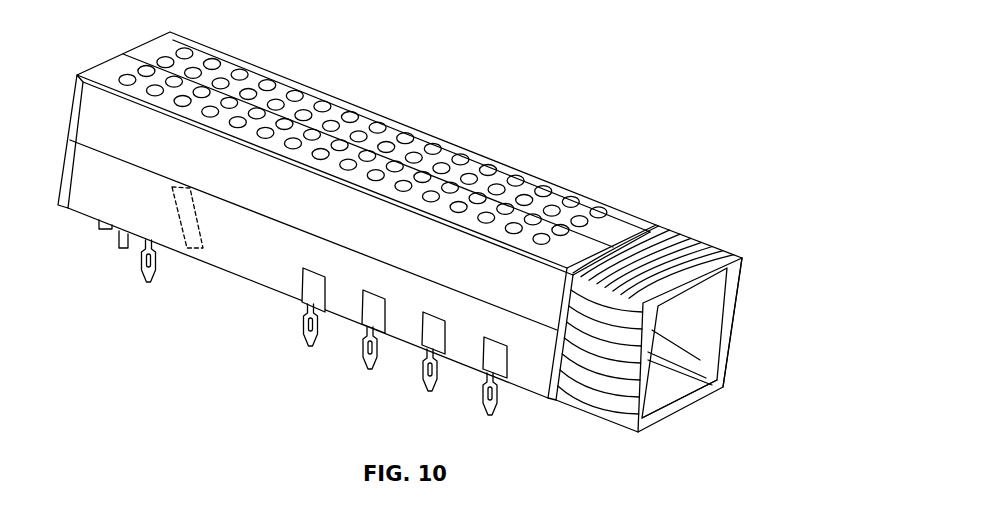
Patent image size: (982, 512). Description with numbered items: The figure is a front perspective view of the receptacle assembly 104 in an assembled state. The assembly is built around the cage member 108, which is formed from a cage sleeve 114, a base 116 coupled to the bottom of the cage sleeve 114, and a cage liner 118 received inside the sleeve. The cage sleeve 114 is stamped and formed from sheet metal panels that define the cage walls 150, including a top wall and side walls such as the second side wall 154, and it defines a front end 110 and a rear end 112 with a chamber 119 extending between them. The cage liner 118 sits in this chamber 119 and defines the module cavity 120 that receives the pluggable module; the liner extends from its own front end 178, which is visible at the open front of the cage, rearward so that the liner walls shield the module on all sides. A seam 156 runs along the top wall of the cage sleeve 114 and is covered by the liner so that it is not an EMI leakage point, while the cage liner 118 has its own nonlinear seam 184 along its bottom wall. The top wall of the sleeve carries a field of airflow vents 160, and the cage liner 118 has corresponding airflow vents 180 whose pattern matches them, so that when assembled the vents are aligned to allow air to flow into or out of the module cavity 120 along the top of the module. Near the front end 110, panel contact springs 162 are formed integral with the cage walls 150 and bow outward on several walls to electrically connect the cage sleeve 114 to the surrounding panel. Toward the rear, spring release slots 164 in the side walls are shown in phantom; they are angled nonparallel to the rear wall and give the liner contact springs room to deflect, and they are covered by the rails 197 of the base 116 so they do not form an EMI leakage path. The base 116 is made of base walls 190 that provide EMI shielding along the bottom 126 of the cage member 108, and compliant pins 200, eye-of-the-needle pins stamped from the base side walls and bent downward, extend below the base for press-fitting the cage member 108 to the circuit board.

The receptacle assembly 104 is at (562, 115).
The cage member 108 is at (558, 180).
The front end 110 is at (678, 402).
The rear end 112 is at (70, 123).
The cage sleeve 114 is at (496, 282).
The base 116 is at (527, 352).
The cage liner 118 is at (683, 330).
The chamber 119 is at (741, 277).
The module cavity 120 is at (716, 316).
The bottom 126 is at (264, 312).
The cage walls 150 is at (422, 136).
The second side wall 154 is at (370, 233).
The seam 156 is at (490, 192).
The airflow vents 160 is at (458, 157).
The panel contact springs 162 is at (583, 373).
The spring release slots 164 is at (186, 232).
The front end 178 is at (739, 302).
The airflow vents 180 is at (601, 211).
The seam 184 is at (668, 379).
The base walls 190 is at (260, 259).
The rails 197 is at (90, 192).
The compliant pins 200 is at (375, 355).